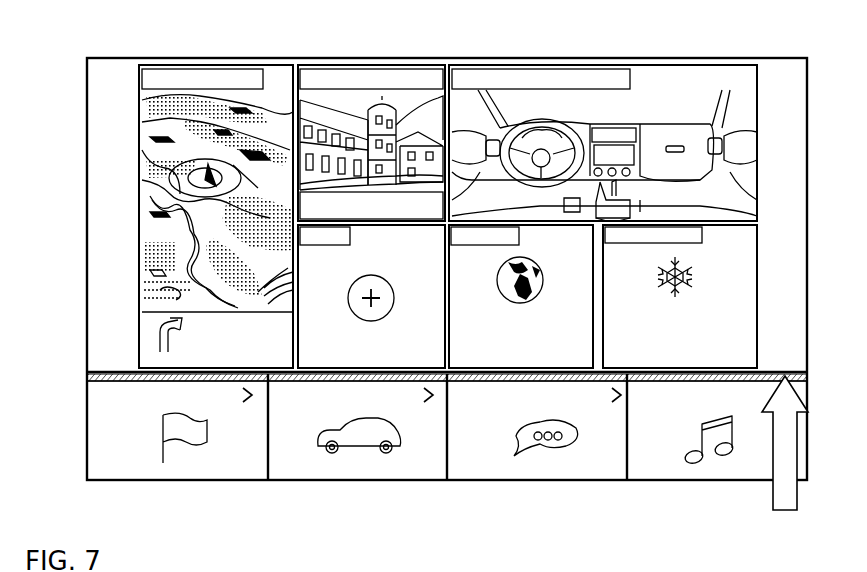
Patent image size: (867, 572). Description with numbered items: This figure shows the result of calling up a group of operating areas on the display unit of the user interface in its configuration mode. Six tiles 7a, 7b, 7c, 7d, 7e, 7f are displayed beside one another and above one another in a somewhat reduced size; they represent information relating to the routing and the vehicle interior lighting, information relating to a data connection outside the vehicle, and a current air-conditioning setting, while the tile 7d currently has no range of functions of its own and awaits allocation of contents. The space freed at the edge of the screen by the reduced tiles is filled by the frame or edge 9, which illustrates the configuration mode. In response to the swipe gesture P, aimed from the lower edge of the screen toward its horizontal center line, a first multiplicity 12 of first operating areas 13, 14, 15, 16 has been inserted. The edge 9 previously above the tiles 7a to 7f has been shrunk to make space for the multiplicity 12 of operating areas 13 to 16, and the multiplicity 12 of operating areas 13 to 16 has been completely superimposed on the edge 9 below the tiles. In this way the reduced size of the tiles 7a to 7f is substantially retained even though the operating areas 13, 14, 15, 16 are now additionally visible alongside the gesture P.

The frame 9 is at (107, 309).
The tile 7a is at (275, 82).
The tile 7b is at (386, 73).
The tile 7c is at (658, 108).
The tile 7d is at (415, 368).
The tile 7e is at (588, 363).
The tile 7f is at (628, 363).
The first multiplicity of first operating areas 12 is at (86, 374).
The first operating area 13 is at (239, 458).
The first operating area 14 is at (299, 458).
The first operating area 15 is at (470, 458).
The first operating area 16 is at (665, 458).
The swipe gesture P is at (785, 443).